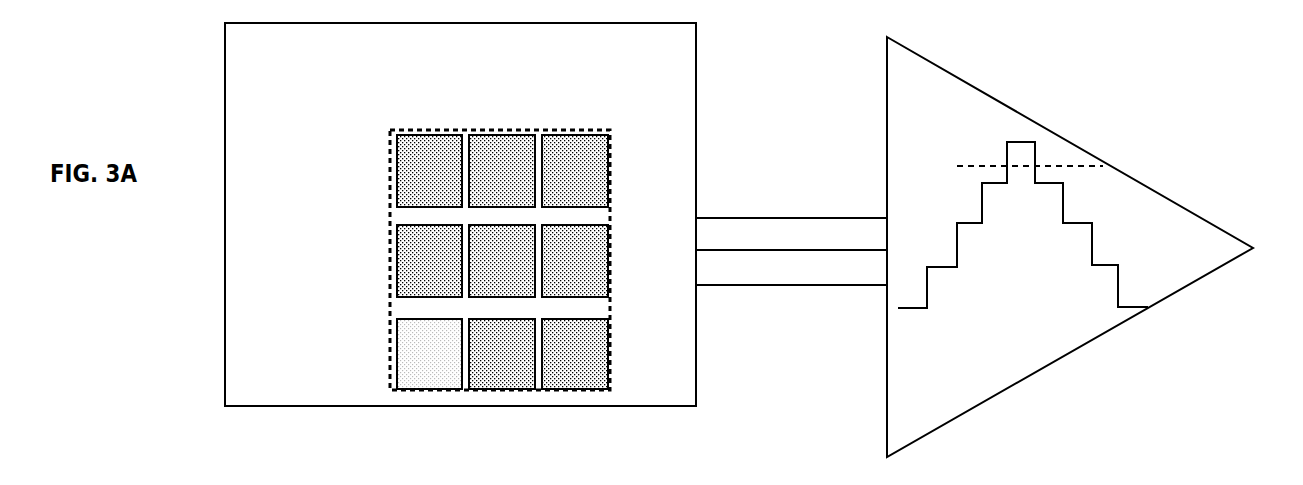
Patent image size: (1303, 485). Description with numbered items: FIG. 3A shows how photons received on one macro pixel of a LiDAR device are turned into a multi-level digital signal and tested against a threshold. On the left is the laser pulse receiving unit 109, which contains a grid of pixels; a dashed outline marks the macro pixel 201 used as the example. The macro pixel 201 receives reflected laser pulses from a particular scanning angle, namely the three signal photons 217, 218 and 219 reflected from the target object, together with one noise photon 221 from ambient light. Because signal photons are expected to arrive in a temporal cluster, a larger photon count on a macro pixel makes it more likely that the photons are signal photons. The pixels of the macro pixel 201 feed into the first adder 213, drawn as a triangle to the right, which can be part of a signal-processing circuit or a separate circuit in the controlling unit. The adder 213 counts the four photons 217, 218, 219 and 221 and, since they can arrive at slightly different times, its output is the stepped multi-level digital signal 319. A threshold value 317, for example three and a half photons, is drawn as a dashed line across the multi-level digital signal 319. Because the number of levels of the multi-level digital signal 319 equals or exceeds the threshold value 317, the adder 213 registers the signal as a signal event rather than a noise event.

The laser pulse receiving unit 109 is at (600, 57).
The macro pixel 201 is at (390, 200).
The signal photon 219 is at (490, 230).
The signal photon 218 is at (577, 235).
The signal photon 217 is at (587, 372).
The noise photon 221 is at (413, 363).
The threshold value 317 is at (1123, 165).
The multi-level digital signal 319 is at (1043, 303).
The adder 1 213 is at (960, 395).